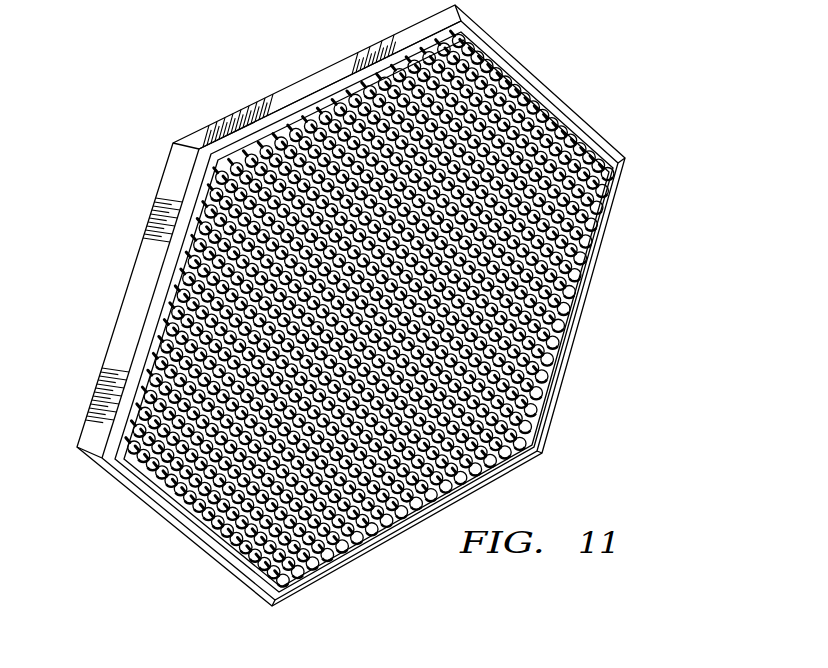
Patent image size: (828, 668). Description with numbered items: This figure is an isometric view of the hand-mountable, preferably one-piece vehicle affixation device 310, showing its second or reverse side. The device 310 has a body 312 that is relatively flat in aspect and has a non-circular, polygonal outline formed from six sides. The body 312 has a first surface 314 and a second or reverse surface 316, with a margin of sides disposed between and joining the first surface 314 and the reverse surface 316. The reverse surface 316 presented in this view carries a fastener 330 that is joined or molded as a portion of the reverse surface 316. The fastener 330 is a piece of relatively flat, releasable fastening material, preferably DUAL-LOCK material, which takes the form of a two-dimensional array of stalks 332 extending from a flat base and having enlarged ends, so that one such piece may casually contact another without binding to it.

The vehicle affixation device 310 is at (588, 64).
The body 312 is at (132, 262).
The first surface 314 is at (297, 90).
The second or reverse surface 316 is at (168, 337).
The fastener 330 is at (547, 413).
The projections 332 is at (606, 236).